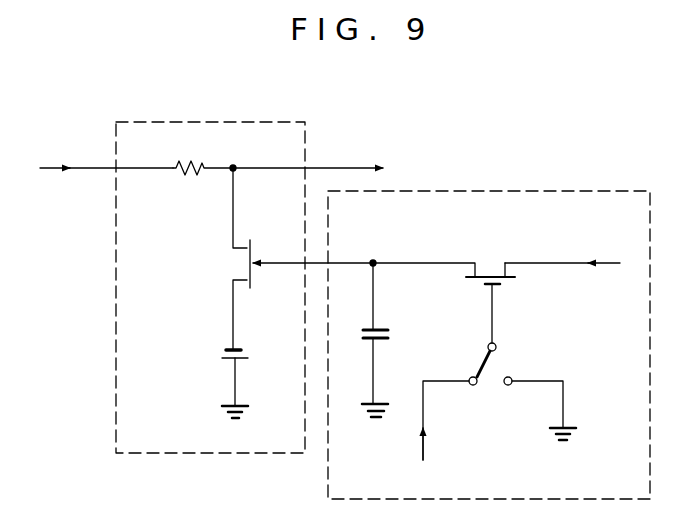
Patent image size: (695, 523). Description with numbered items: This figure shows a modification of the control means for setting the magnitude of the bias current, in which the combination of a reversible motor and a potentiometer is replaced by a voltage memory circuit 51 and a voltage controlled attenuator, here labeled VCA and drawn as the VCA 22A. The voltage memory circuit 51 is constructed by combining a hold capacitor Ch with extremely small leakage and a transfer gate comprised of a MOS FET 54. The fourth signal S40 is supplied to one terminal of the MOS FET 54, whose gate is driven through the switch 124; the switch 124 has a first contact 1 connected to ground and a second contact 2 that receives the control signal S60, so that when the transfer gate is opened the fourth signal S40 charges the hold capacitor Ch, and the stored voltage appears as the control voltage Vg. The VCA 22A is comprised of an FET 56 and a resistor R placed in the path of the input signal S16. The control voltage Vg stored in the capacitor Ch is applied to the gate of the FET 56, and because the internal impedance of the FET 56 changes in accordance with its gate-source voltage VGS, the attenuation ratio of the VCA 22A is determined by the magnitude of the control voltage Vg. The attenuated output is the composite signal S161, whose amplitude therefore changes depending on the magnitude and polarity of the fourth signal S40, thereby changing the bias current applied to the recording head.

The VCA 22A is at (226, 138).
The voltage memory circuit 51 is at (532, 212).
The MOS FET 54 is at (490, 272).
The FET 56 is at (236, 262).
The switch 124 is at (497, 349).
The resistor R is at (189, 178).
The hold capacitor Ch is at (392, 336).
The control voltage Vg is at (375, 262).
The gate-source voltage VGS is at (240, 322).
The signal S16 is at (101, 154).
The composite signal S161 is at (320, 156).
The fourth signal S40 is at (571, 250).
The control signal S60 is at (439, 434).
The voltage controlled attenuator VCA is at (150, 439).
The first contact 1 is at (509, 404).
The second contact 2 is at (473, 404).